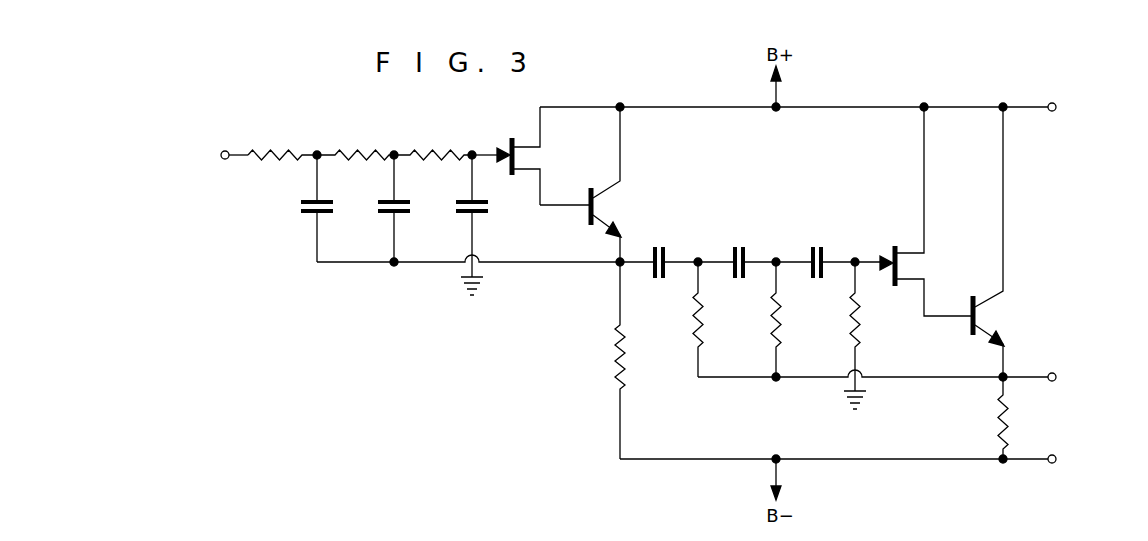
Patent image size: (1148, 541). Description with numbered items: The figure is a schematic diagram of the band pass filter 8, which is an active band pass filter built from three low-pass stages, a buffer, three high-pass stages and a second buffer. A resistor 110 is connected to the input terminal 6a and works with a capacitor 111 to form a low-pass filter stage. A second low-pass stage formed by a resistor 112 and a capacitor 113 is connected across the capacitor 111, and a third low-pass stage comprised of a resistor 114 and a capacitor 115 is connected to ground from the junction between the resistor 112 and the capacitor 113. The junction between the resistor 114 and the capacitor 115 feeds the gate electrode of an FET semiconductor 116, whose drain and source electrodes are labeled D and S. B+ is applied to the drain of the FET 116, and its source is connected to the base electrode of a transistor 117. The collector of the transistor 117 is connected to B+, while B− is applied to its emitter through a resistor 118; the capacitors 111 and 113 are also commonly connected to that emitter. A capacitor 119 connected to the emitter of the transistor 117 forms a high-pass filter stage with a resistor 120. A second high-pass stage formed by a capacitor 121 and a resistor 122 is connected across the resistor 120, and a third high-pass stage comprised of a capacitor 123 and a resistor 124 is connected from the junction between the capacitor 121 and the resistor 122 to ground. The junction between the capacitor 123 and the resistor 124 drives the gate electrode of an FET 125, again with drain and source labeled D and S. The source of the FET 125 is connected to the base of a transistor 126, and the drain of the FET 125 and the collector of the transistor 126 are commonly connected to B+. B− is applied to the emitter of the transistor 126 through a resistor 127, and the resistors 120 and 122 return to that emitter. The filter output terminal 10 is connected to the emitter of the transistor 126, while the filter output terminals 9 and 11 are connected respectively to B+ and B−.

The input terminal 6a is at (225, 159).
The band pass filter 8 is at (697, 92).
The filter output terminal 9 is at (1052, 102).
The filter output terminal 10 is at (1053, 373).
The filter output terminal 11 is at (1053, 464).
The resistor 110 is at (273, 150).
The capacitor 111 is at (333, 206).
The resistor 112 is at (352, 150).
The capacitor 113 is at (410, 206).
The resistor 114 is at (433, 150).
The capacitor 115 is at (488, 207).
The FET semiconductor 116 is at (506, 142).
The transistor 117 is at (588, 219).
The resistor 118 is at (618, 361).
The capacitor 119 is at (660, 246).
The resistor 120 is at (702, 323).
The capacitor 121 is at (740, 246).
The resistor 122 is at (780, 323).
The capacitor 123 is at (818, 246).
The resistor 124 is at (859, 323).
The FET 125 is at (890, 250).
The transistor 126 is at (971, 300).
The resistor 127 is at (996, 419).